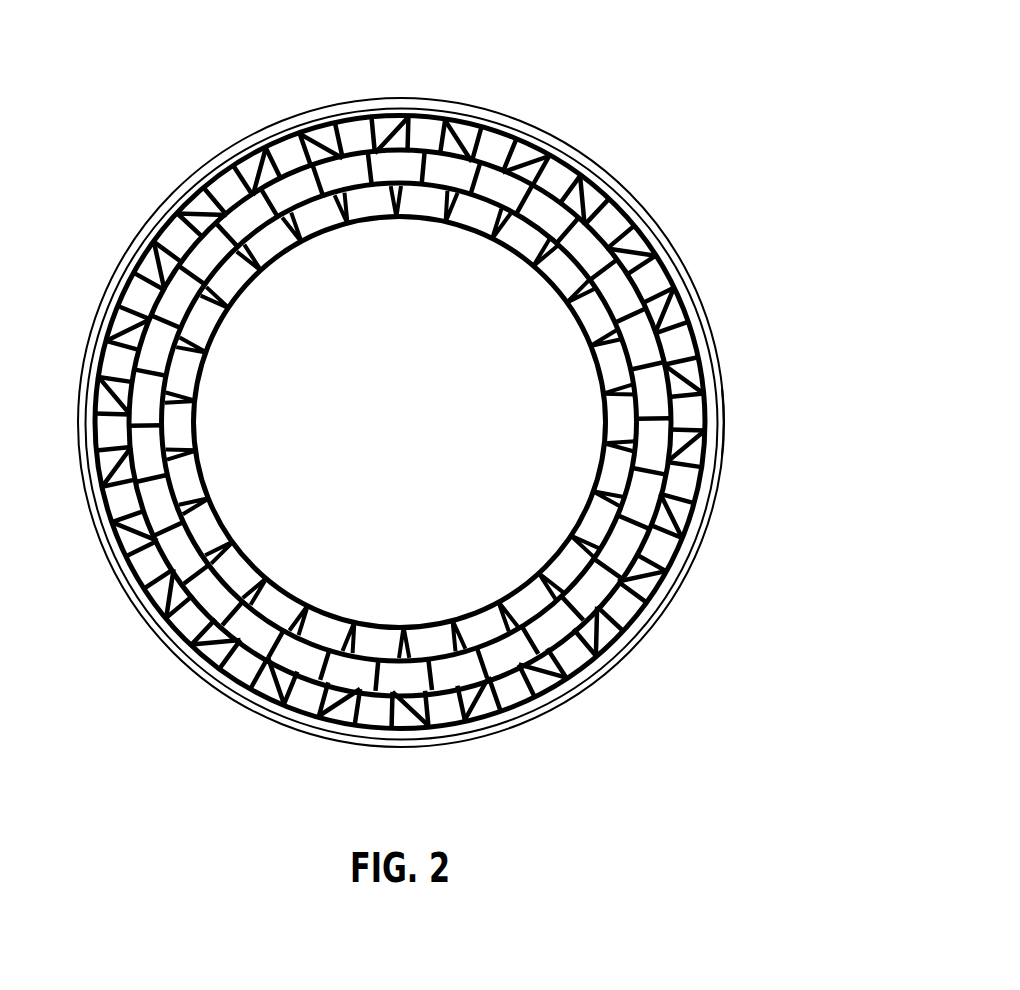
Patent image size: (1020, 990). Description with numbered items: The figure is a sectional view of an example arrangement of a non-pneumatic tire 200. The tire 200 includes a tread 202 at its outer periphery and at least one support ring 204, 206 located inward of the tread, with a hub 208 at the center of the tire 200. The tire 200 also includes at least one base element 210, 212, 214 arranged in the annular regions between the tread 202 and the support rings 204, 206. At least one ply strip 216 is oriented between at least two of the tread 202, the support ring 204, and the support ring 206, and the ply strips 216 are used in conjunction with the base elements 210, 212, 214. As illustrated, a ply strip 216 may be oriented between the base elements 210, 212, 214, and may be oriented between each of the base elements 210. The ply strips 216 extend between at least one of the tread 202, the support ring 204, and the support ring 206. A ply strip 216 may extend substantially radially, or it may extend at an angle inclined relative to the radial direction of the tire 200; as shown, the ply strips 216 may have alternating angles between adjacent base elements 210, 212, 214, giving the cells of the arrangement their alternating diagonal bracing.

The non-pneumatic tire 200 is at (158, 90).
The tread 202 is at (480, 100).
The support ring 204 is at (663, 257).
The support ring 206 is at (558, 255).
The hub 208 is at (395, 213).
The base element 210 is at (602, 210).
The base element 212 is at (268, 264).
The base element 214 is at (368, 638).
The ply strip 216 is at (705, 503).